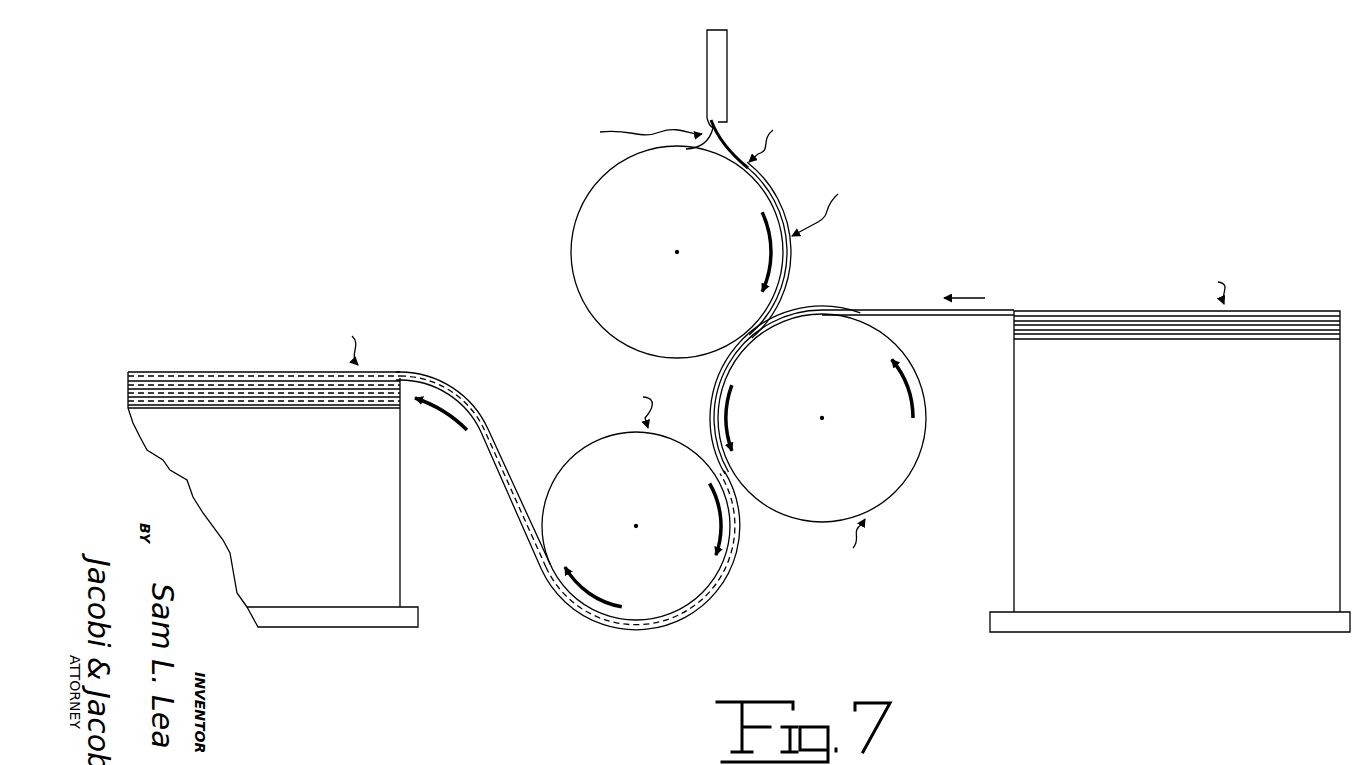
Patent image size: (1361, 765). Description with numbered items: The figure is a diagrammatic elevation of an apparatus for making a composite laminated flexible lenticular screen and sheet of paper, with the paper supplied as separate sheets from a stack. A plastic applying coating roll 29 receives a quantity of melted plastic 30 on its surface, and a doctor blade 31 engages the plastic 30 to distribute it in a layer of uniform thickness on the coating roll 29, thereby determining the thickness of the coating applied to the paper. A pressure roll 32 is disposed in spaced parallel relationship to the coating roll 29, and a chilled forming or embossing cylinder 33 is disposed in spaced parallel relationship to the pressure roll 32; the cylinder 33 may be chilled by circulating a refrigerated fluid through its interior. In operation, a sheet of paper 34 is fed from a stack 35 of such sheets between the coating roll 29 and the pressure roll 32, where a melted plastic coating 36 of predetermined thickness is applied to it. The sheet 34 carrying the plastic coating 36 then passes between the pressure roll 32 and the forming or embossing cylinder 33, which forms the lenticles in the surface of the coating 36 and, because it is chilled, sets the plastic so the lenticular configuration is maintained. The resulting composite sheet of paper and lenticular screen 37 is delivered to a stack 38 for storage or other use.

The plastic applying coating roll 29 is at (566, 236).
The plastic 30 is at (709, 128).
The doctor blade 31 is at (734, 148).
The pressure roll 32 is at (902, 486).
The chilled forming or embossing cylinder 33 is at (575, 448).
The sheet of paper 34 is at (995, 309).
The stack 35 is at (1256, 584).
The plastic coating 36 is at (708, 418).
The composite sheet of paper and lenticular screen 37 is at (498, 474).
The stack 38 is at (400, 578).